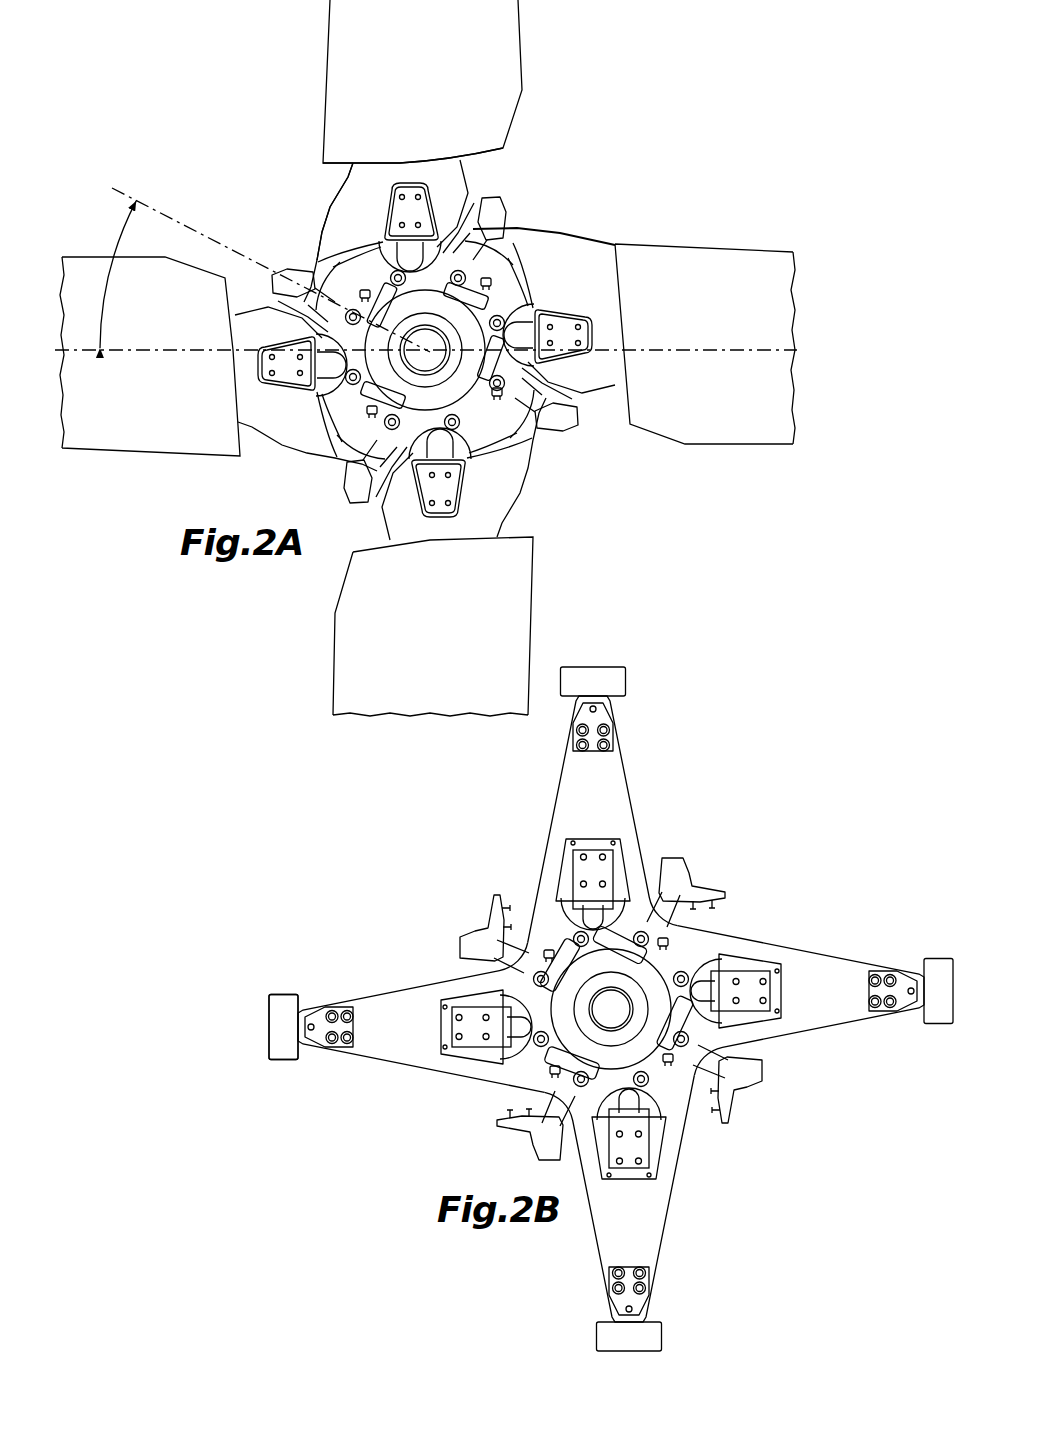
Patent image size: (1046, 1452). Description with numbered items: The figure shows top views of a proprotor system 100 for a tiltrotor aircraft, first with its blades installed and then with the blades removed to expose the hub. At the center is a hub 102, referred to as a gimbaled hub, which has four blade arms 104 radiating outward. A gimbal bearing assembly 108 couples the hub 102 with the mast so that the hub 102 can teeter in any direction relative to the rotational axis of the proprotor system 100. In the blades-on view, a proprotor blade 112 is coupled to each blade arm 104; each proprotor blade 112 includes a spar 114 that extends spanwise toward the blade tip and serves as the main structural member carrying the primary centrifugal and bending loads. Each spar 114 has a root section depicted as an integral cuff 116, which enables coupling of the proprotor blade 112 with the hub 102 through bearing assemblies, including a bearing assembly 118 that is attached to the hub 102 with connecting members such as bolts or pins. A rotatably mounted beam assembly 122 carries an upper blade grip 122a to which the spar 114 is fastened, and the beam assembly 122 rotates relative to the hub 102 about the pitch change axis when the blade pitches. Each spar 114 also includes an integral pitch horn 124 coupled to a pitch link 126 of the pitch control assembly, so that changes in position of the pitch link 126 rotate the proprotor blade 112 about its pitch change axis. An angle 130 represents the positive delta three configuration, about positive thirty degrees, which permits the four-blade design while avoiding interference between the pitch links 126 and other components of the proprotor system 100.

In FIG. 2A, the proprotor system 100 is at (460, 306).
In FIG. 2B, the proprotor system 100 is at (604, 1009).
In FIG. 2A, the hub 102 is at (415, 320).
In FIG. 2B, the hub 102 is at (611, 1009).
In FIG. 2B, the blade arm 104 is at (565, 822).
In FIG. 2A, the gimbal bearing assembly 108 is at (493, 288).
In FIG. 2B, the gimbal bearing assembly 108 is at (679, 951).
In FIG. 2A, the proprotor blade 112 is at (427, 71).
In FIG. 2A, the spar 114 is at (405, 170).
In FIG. 2A, the integral cuff 116 is at (368, 172).
In FIG. 2B, the bearing assembly 118 is at (285, 1002).
In FIG. 2B, the beam assembly 122 is at (580, 870).
In FIG. 2B, the upper blade grip 122a is at (633, 1150).
In FIG. 2A, the integral pitch horn 124 is at (328, 232).
In FIG. 2A, the pitch link 126 is at (273, 292).
In FIG. 2B, the pitch link 126 is at (465, 950).
In FIG. 2A, the angle 130 is at (426, 270).